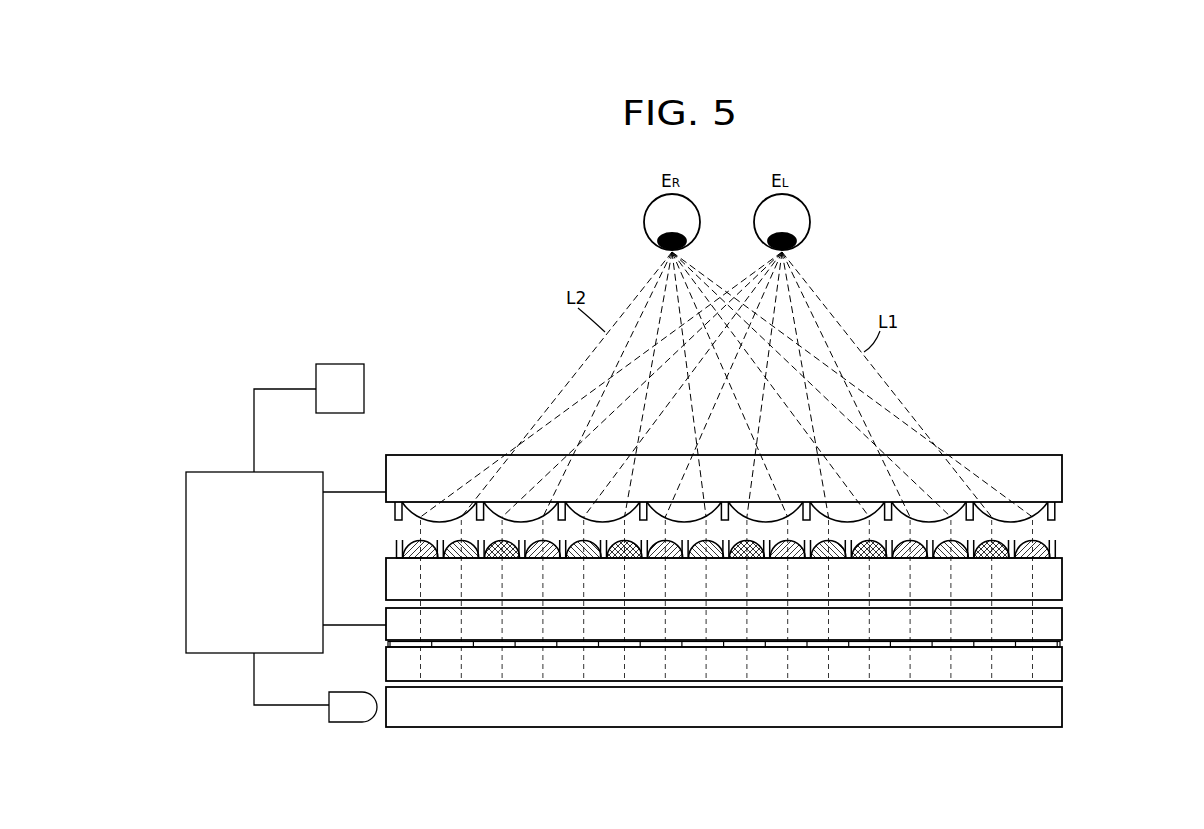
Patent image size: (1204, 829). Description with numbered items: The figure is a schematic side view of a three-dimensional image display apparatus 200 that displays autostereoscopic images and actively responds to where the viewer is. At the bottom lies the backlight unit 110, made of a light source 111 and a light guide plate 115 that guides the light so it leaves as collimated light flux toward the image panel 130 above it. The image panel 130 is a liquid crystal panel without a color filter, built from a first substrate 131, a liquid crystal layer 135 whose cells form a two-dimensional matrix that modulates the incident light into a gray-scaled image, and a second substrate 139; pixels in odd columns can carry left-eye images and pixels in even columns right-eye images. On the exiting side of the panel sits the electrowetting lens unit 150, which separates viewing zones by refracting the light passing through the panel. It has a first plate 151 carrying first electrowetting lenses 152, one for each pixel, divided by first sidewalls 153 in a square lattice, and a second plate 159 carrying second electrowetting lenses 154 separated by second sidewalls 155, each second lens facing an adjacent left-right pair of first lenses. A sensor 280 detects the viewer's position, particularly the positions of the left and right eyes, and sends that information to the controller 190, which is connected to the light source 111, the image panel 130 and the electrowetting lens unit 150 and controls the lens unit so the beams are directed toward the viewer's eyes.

The 3D image display apparatus 200 is at (1050, 326).
The controller 190 is at (216, 471).
The sensor 280 is at (340, 363).
The light source 111 is at (346, 725).
The backlight unit 110 is at (793, 707).
The light guide plate 115 is at (1063, 707).
The image panel 130 is at (793, 644).
The first substrate 131 is at (1063, 663).
The liquid crystal layer 135 is at (1061, 645).
The second substrate 139 is at (1063, 622).
The electrowetting lens unit 150 is at (793, 527).
The first plate 151 is at (1063, 582).
The first electrowetting lenses 152 is at (1057, 545).
The first sidewalls 153 is at (1046, 554).
The second electrowetting lenses 154 is at (1042, 519).
The second sidewalls 155 is at (1056, 508).
The second plate 159 is at (1063, 469).